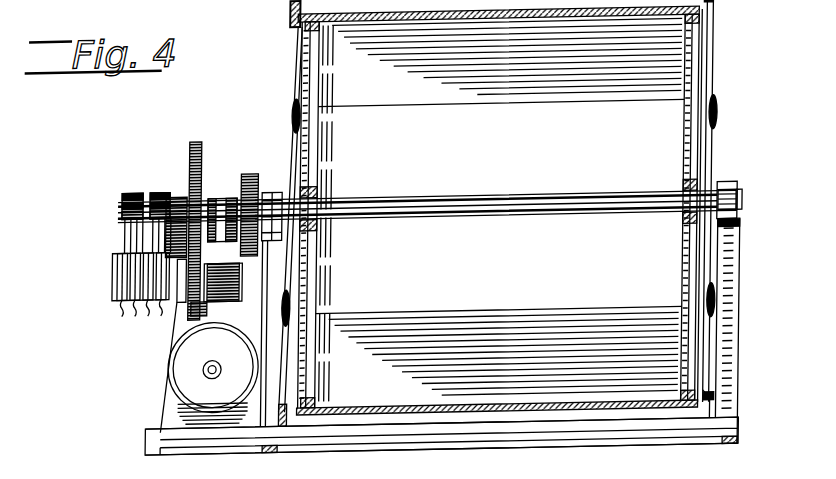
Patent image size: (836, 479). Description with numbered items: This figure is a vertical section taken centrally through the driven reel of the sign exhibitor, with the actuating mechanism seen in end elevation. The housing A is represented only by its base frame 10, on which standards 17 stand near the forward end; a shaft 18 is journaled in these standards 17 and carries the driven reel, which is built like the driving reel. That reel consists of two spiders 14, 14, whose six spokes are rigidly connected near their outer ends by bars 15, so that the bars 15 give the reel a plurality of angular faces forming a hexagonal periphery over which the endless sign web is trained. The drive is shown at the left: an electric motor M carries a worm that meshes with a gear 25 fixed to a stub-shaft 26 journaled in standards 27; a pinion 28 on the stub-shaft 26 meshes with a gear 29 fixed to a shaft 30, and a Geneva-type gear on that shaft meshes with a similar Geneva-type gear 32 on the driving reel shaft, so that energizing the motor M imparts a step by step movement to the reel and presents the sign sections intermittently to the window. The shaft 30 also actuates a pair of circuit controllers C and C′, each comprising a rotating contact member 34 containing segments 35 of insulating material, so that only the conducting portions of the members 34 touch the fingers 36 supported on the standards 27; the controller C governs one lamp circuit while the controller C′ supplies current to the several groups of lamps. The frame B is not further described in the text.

The base frame 10 is at (383, 457).
The spiders 14 is at (317, 132).
The bars 15 is at (488, 22).
The standards 17 is at (296, 386).
The shaft 18 is at (712, 213).
The gear 25 is at (238, 282).
The stub-shaft 26 is at (160, 303).
The standards 27 is at (168, 357).
The pinion 28 is at (190, 297).
The gear 29 is at (202, 151).
The shaft 30 is at (122, 211).
The Geneva-type gear 32 is at (254, 176).
The rotating contact member 34 is at (122, 191).
The segments 35 is at (122, 203).
The fingers 36 is at (122, 240).
The housing A is at (455, 455).
The frame B is at (707, 64).
The circuit controller C is at (128, 202).
The circuit controller C' is at (161, 198).
The electric motor M is at (212, 373).